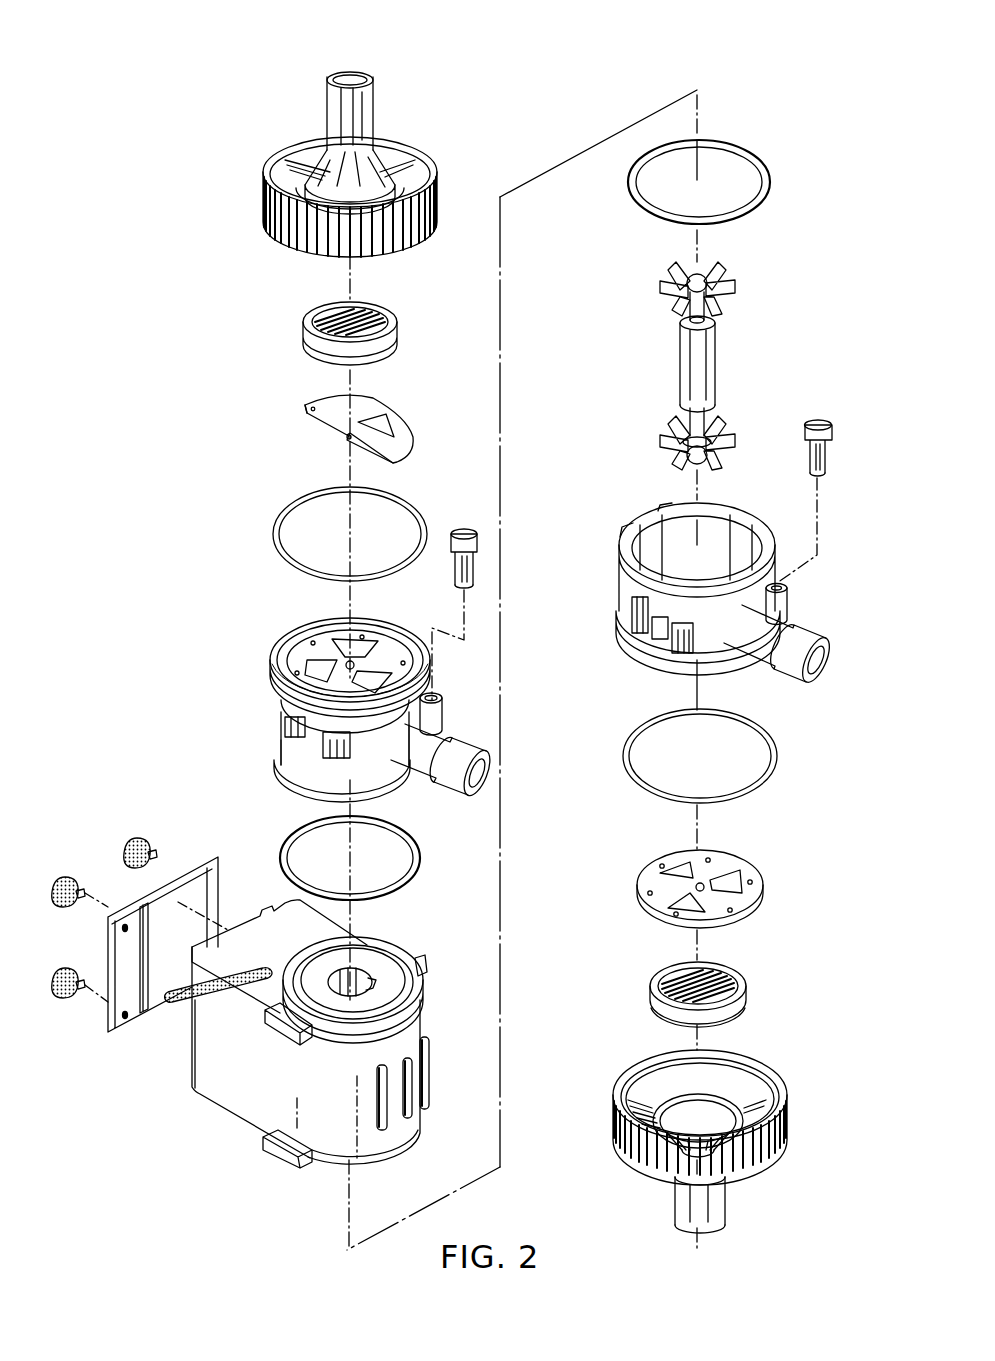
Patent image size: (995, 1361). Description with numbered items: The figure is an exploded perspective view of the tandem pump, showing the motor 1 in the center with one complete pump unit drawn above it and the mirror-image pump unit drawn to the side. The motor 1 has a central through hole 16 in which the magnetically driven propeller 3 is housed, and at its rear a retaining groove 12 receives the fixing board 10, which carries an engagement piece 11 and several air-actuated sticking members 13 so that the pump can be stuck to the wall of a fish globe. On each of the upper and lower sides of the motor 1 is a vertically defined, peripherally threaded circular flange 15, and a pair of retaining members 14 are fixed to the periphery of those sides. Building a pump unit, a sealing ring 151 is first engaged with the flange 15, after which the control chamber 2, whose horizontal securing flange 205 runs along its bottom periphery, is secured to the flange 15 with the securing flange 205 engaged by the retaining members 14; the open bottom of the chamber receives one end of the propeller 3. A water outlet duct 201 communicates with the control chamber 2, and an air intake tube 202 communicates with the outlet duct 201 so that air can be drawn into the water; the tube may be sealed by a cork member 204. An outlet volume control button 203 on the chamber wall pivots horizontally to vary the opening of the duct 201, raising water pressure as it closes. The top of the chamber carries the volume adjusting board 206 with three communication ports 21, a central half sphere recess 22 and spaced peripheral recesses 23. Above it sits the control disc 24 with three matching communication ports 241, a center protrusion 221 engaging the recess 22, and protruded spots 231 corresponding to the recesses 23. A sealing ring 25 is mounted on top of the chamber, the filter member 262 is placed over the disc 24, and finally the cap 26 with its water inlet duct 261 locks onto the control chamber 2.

The motor 1 is at (245, 1090).
The control chamber 2 is at (287, 702).
The magnetically driven propeller 3 is at (718, 350).
The fixing board 10 is at (120, 1035).
The engagement piece 11 is at (153, 1018).
The retaining groove 12 is at (273, 926).
The air-actuated sticking members 13 is at (142, 854).
The retaining members 14 is at (422, 960).
The circular flange 15 is at (372, 965).
The central through hole 16 is at (372, 984).
The sealing ring 151 is at (420, 860).
The water outlet duct 201 is at (490, 760).
The air intake tube 202 is at (438, 698).
The outlet volume control button 203 is at (342, 760).
The cork member 204 is at (462, 530).
The securing flange 205 is at (287, 724).
The volume adjusting board 206 is at (295, 642).
The communication ports 21 is at (312, 634).
The half sphere recess 22 is at (350, 661).
The spaced recesses 23 is at (380, 650).
The center protrusion 221 is at (349, 440).
The protruded spots 231 is at (320, 415).
The control disc 24 is at (322, 400).
The communication ports 241 is at (388, 424).
The sealing ring 25 is at (275, 522).
The cap 26 is at (268, 187).
The water inlet duct 261 is at (360, 75).
The filter member 262 is at (306, 310).